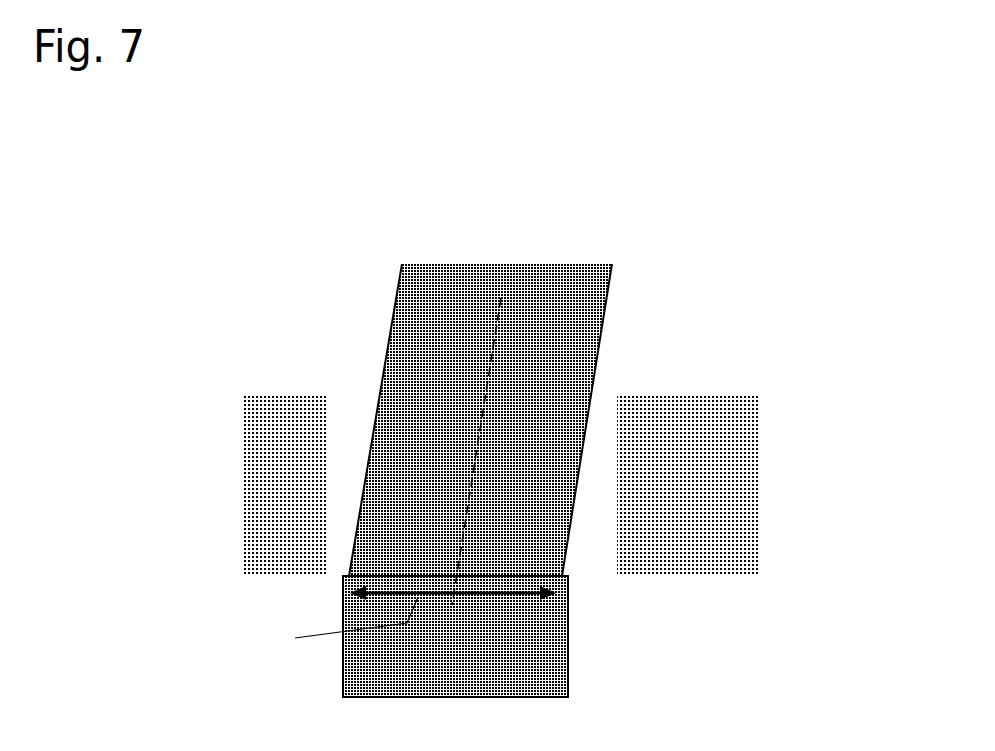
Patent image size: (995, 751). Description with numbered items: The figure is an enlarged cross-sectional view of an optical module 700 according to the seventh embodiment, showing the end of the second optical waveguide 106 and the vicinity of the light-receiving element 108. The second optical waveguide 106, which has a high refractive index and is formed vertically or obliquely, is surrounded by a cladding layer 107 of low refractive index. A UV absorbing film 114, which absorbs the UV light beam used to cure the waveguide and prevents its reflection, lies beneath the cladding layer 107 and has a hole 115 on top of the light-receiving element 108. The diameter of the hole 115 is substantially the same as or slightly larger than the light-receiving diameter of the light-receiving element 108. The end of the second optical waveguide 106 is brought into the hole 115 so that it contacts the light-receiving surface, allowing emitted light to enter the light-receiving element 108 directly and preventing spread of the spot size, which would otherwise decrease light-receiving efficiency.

The optical module 700 is at (203, 220).
The second optical waveguide 106 is at (540, 298).
The cladding layer 107 is at (740, 292).
The UV absorbing film 114 is at (737, 433).
The hole 115 is at (351, 427).
The light-receiving element 108 is at (568, 641).